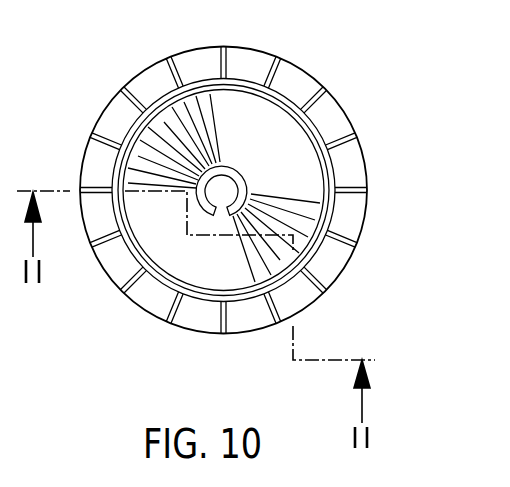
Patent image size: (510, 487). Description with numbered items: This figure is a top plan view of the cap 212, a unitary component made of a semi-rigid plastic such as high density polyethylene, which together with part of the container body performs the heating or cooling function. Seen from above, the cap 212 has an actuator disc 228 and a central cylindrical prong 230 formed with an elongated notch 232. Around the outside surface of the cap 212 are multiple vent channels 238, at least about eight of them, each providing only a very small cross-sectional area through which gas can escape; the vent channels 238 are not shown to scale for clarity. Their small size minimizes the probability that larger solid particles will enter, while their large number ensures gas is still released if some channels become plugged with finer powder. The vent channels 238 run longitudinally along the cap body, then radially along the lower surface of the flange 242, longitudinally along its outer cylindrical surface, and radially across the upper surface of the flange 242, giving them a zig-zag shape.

The cap 212 is at (345, 278).
The actuator disc 228 is at (305, 170).
The cylindrical prong 230 is at (229, 165).
The elongated notch 232 is at (222, 218).
The vent channels 238 is at (321, 147).
The flange 242 is at (148, 80).